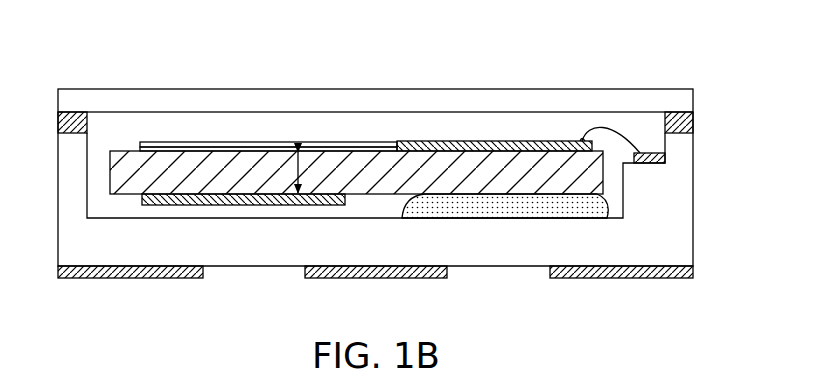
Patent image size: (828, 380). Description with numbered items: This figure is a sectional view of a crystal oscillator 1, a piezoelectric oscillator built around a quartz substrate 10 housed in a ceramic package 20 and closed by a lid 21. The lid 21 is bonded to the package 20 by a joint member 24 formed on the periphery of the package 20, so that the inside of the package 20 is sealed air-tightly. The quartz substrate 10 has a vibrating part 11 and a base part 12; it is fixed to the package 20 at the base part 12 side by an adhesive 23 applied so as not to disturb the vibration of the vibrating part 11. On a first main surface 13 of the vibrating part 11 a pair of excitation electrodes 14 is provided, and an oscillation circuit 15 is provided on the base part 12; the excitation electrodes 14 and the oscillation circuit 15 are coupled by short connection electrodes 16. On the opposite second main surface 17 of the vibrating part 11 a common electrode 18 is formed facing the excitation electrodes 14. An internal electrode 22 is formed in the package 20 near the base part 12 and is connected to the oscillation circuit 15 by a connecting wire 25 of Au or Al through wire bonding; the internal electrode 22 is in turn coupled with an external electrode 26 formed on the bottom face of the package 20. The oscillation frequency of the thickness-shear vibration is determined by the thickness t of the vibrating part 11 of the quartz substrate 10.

The crystal oscillator 1 is at (645, 64).
The quartz substrate 10 is at (178, 130).
The vibrating part 11 is at (222, 168).
The base part 12 is at (508, 165).
The first main surface 13 is at (128, 145).
The excitation electrodes 14 is at (267, 143).
The oscillation circuit 15 is at (467, 140).
The connection electrodes 16 is at (375, 146).
The second main surface 17 is at (122, 197).
The common electrode 18 is at (228, 207).
The package 20 is at (690, 212).
The lid 21 is at (552, 98).
The internal electrode 22 is at (666, 159).
The adhesive 23 is at (483, 207).
The joint member 24 is at (690, 118).
The connecting wire 25 is at (622, 130).
The external electrode 26 is at (173, 267).
The thickness t is at (297, 192).